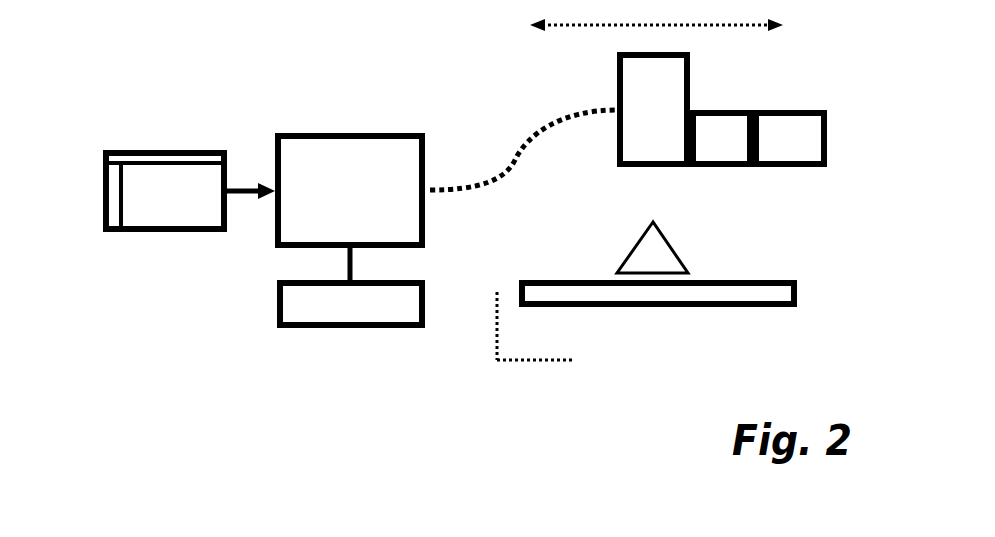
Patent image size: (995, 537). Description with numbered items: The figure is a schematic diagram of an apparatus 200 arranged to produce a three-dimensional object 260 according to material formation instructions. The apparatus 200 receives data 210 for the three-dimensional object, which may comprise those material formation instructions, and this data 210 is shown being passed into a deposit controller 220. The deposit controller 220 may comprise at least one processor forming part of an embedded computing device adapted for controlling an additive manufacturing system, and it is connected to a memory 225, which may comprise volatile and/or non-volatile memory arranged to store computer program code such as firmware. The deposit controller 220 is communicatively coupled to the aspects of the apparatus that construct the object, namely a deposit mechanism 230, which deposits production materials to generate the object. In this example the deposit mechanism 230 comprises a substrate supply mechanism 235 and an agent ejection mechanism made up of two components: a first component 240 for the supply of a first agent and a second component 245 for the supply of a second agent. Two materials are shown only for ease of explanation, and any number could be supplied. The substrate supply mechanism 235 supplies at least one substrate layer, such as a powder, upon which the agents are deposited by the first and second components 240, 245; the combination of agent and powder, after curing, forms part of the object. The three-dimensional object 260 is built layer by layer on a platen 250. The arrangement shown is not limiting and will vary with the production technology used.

The apparatus 200 is at (260, 42).
The data 210 is at (165, 150).
The deposit controller 220 is at (352, 133).
The memory 225 is at (307, 330).
The deposit mechanism 230 is at (719, 93).
The substrate supply mechanism 235 is at (653, 109).
The first component of agent ejection mechanism 240 is at (721, 138).
The second component of agent ejection mechanism 245 is at (790, 138).
The platen 250 is at (780, 278).
The three-dimensional object 260 is at (680, 255).